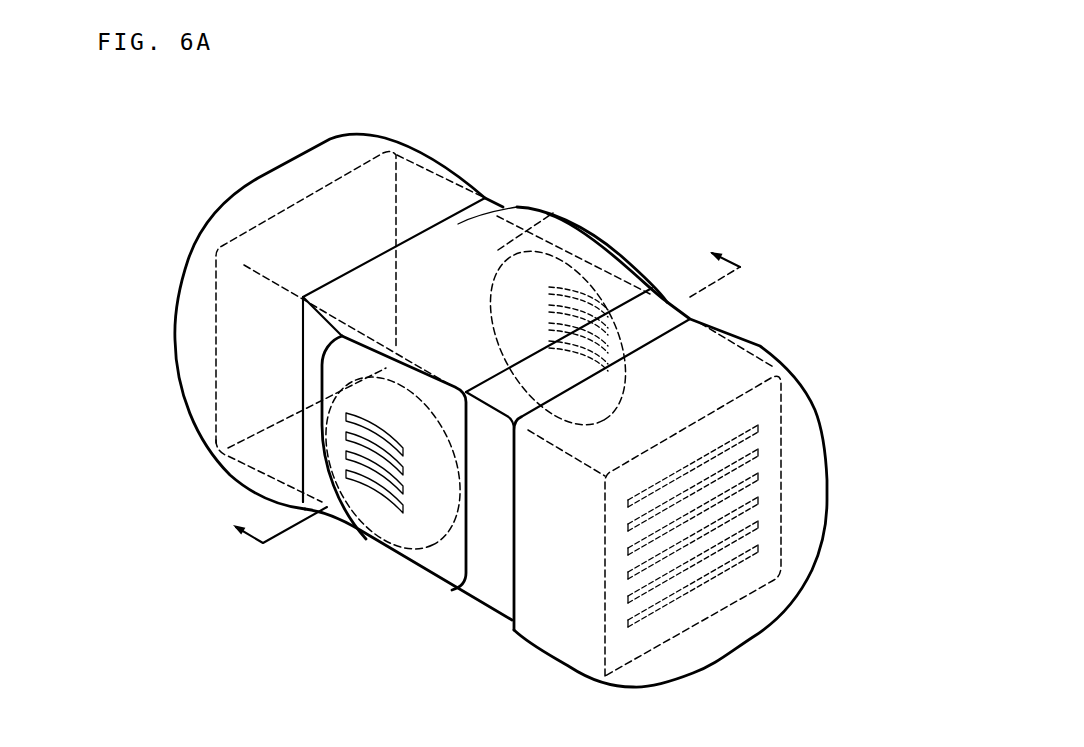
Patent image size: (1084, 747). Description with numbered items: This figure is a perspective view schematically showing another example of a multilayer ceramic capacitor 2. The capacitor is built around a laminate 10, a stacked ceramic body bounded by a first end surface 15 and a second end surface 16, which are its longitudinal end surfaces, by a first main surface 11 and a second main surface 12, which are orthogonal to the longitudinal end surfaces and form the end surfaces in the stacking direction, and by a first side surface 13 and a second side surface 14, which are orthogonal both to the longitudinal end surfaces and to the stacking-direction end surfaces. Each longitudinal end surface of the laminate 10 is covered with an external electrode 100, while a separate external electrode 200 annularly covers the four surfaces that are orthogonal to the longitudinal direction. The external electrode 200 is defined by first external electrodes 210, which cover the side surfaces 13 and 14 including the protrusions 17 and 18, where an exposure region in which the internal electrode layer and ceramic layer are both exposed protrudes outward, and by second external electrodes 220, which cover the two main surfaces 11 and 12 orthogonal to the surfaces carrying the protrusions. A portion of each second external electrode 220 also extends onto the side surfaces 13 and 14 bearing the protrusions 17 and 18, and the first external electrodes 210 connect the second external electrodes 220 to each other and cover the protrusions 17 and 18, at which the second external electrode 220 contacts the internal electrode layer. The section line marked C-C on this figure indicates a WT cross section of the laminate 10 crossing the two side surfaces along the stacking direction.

The multilayer ceramic capacitor 2 is at (851, 202).
The laminate 10 is at (504, 532).
The first main surface 11 is at (647, 318).
The second main surface 12 is at (535, 604).
The first side surface 13 is at (487, 543).
The second side surface 14 is at (543, 210).
The first end surface 15 is at (317, 227).
The second end surface 16 is at (770, 473).
The protrusion 17 is at (343, 437).
The protrusion 18 is at (607, 238).
The external electrode 100 is at (337, 148).
The external electrode 200 is at (459, 369).
The first external electrode 210 is at (338, 362).
The second external electrode 220 is at (484, 238).